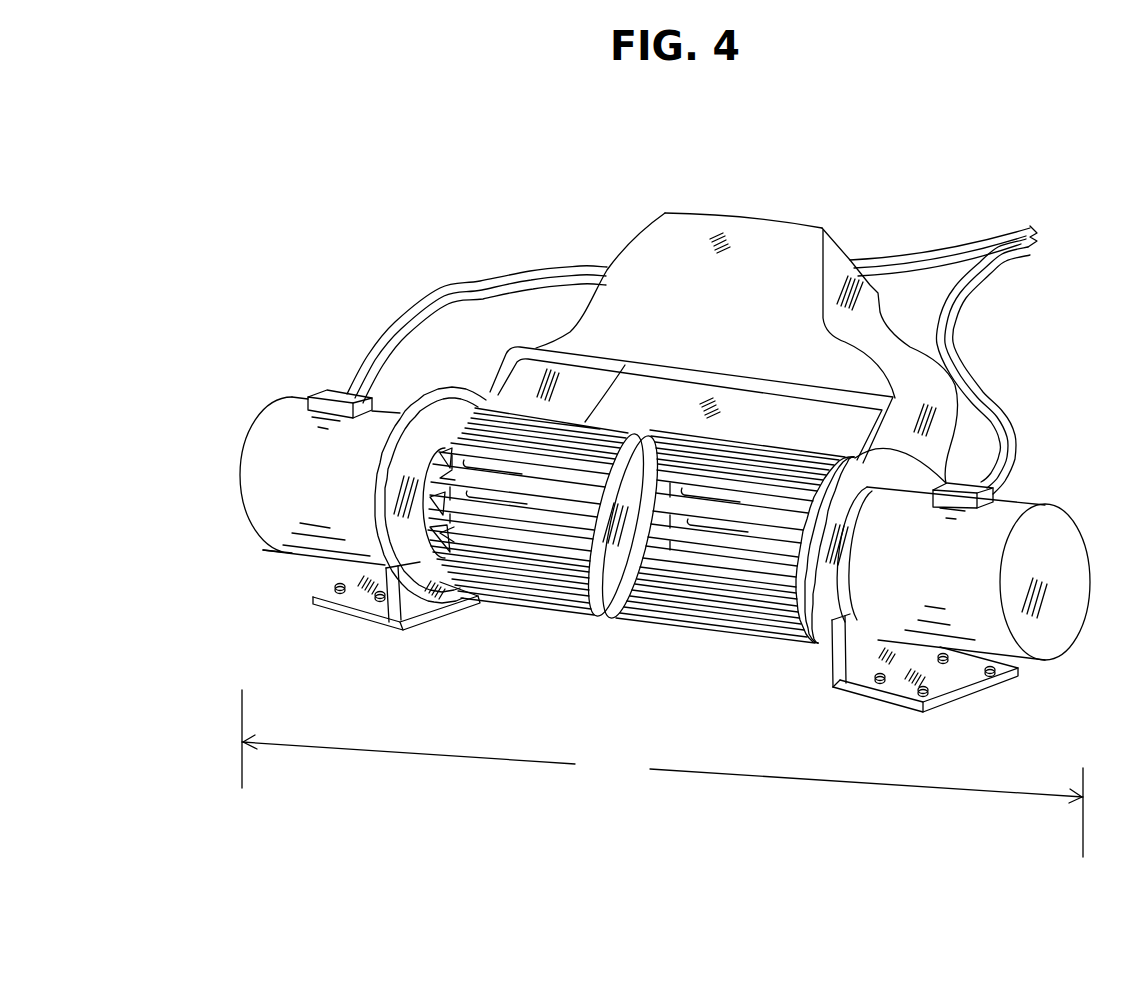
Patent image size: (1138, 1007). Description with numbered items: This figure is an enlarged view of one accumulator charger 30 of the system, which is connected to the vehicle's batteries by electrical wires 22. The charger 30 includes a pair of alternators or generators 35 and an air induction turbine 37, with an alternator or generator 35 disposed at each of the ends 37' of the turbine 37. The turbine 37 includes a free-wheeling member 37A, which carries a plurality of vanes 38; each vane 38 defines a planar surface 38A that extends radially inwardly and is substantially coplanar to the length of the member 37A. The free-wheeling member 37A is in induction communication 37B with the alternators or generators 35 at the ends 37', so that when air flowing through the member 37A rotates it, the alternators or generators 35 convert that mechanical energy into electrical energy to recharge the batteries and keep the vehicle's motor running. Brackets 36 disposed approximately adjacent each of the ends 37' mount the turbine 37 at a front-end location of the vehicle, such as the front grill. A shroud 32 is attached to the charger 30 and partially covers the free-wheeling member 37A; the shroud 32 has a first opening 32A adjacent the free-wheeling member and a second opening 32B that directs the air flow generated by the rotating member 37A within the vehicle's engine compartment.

The accumulator charger 30 is at (286, 342).
The electrical wires 22 is at (891, 250).
The shroud 32 is at (873, 320).
The first opening 32A is at (880, 411).
The second opening 32B is at (711, 207).
The alternator or generator 35 is at (243, 456).
The bracket 36 is at (315, 598).
The air induction turbine 37 is at (623, 561).
The end 37' is at (624, 577).
The free-wheeling member 37A is at (527, 603).
The induction communication 37B is at (453, 440).
The vane 38 is at (455, 435).
The planar surface 38A is at (470, 442).